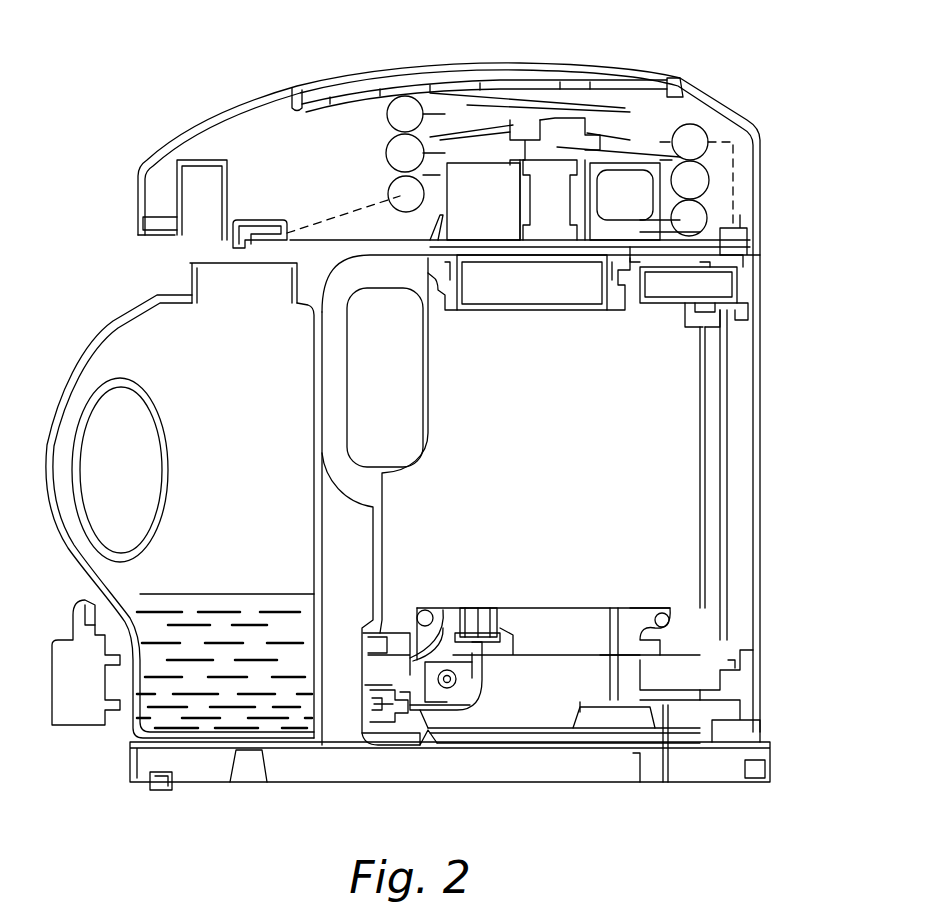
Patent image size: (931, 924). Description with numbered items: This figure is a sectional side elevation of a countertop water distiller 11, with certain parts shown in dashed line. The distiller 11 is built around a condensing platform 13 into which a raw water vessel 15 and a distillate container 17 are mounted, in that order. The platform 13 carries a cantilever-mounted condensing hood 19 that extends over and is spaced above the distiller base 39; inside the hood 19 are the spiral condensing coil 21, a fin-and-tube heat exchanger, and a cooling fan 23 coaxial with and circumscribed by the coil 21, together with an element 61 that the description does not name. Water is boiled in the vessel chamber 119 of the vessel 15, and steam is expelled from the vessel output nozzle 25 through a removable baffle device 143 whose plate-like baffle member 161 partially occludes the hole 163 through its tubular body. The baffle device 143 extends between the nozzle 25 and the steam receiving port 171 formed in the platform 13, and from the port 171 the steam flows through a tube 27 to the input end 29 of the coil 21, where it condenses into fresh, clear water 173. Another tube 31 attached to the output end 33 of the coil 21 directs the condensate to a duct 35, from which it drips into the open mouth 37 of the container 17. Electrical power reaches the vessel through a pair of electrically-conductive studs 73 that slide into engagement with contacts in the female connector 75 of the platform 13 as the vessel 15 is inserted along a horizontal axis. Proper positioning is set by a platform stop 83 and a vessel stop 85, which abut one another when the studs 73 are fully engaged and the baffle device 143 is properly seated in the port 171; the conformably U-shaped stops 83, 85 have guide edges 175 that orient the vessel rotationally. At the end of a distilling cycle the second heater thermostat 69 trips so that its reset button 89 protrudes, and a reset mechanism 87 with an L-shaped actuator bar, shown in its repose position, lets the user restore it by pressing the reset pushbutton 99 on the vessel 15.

The distiller 11 is at (228, 84).
The condensing platform 13 is at (272, 94).
The raw water vessel 15 is at (343, 514).
The distillate container 17 is at (135, 336).
The condensing hood 19 is at (708, 88).
The spiral condensing coil 21 is at (446, 115).
The cooling fan 23 is at (515, 122).
The vessel output nozzle 25 is at (668, 262).
The tube 27 is at (736, 160).
The input end 29 is at (714, 142).
The tube 31 is at (333, 210).
The output end 33 is at (387, 197).
The duct 35 is at (268, 218).
The open mouth 37 is at (187, 264).
The distiller base 39 is at (183, 782).
The bulb holder 61 is at (522, 196).
The second heater thermostat 69 is at (478, 612).
The electrically-conductive studs 73 is at (665, 783).
The female connector 75 is at (730, 707).
The platform stop 83 is at (440, 744).
The vessel stop 85 is at (433, 748).
The reset mechanism 87 is at (490, 693).
The reset button 89 is at (513, 668).
The reset pushbutton 99 is at (373, 704).
The vessel chamber 119 is at (672, 428).
The baffle device 143 is at (673, 293).
The baffle member 161 is at (660, 262).
The hole 163 is at (718, 284).
The steam receiving port 171 is at (745, 310).
The water 173 is at (158, 592).
The guide edges 175 is at (582, 730).